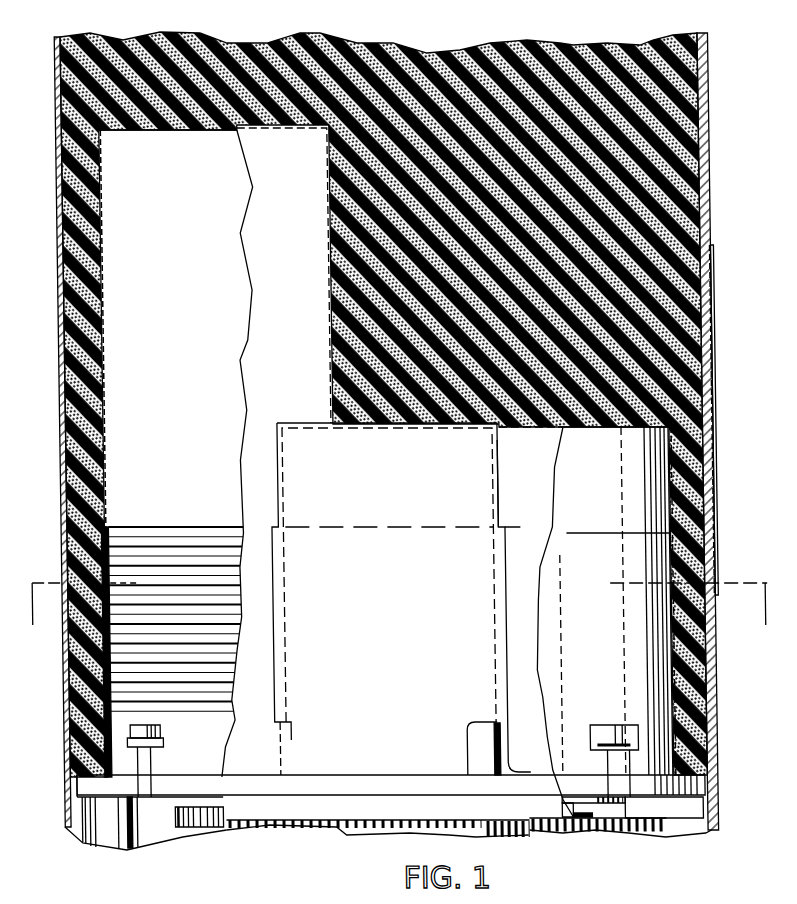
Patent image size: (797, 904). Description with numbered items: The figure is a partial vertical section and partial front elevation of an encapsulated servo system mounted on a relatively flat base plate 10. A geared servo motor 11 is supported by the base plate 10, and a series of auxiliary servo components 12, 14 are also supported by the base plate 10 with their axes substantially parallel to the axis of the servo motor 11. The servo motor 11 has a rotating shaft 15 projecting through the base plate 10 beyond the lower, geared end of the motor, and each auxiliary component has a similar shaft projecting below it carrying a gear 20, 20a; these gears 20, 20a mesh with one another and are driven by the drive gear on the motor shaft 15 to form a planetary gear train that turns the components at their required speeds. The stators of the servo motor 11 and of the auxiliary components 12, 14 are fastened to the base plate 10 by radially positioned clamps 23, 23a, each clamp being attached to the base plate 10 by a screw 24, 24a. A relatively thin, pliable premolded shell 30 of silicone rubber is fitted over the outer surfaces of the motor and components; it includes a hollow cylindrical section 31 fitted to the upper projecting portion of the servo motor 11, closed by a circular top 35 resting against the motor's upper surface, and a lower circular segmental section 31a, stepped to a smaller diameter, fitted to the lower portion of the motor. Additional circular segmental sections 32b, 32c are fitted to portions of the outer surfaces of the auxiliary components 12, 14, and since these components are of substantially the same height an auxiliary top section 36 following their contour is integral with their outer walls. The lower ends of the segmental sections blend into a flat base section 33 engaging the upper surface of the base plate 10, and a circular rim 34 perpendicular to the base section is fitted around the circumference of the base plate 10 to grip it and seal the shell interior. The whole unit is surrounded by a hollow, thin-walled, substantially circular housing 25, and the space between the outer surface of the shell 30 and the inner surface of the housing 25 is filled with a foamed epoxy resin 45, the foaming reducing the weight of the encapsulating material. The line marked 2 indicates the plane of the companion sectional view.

The foamed epoxy resin 45 is at (496, 40).
The housing 25 is at (53, 280).
The circular top 35 is at (138, 132).
The hollow cylindrical section 31 is at (97, 208).
The geared servo motor 11 is at (163, 329).
The lower circular segmental section 31a is at (102, 548).
The section line 2 is at (396, 613).
The premolded shell 30 is at (372, 428).
The auxiliary top section 36 is at (421, 427).
The circular segmental section 32b is at (491, 485).
The auxiliary servo component 12 is at (369, 609).
The auxiliary servo component 14 is at (565, 474).
The circular segmental section 32c is at (665, 480).
The screw 24 is at (150, 732).
The screw 24a is at (602, 730).
The flat base section 33 is at (79, 783).
The circular rim 34 is at (60, 830).
The base plate 10 is at (149, 785).
The clamp 23 is at (129, 770).
The clamp 23a is at (604, 805).
The rotating shaft 15 is at (184, 822).
The gear 20 is at (373, 830).
The gear 20a is at (551, 840).